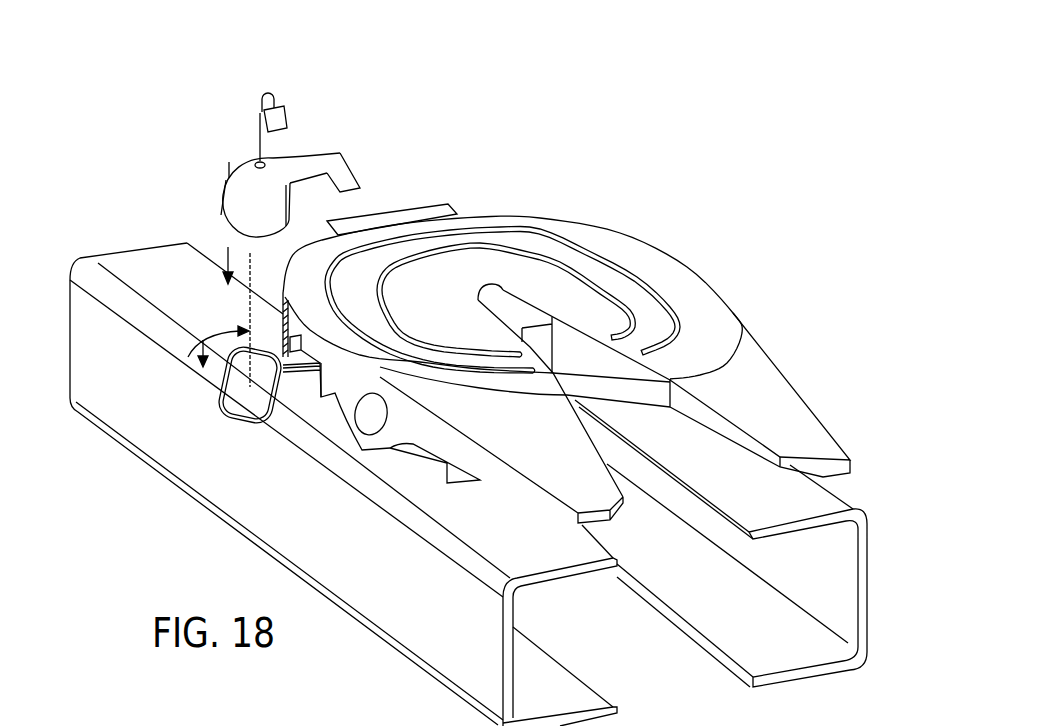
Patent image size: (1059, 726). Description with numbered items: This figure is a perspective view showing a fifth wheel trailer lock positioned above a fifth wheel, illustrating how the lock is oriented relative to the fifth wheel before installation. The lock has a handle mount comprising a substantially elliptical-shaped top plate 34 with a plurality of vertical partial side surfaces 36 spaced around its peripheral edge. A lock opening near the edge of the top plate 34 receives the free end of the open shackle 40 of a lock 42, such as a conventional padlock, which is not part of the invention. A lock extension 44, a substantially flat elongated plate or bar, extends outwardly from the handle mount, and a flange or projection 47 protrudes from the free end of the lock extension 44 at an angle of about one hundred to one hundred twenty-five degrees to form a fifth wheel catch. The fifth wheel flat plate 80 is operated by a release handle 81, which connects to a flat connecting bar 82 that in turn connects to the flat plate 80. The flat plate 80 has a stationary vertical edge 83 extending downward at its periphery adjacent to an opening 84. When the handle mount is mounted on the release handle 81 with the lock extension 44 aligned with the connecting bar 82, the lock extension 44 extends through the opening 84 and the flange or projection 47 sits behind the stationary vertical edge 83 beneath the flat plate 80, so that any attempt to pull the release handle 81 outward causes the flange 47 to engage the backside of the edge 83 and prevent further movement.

The top plate 34 is at (268, 209).
The vertical partial side surfaces 36 is at (228, 163).
The open shackle 40 is at (258, 100).
The lock 42 is at (284, 117).
The lock extension 44 is at (314, 152).
The flange or projection 47 is at (353, 178).
The fifth wheel flat plate 80 is at (657, 260).
The release handle 81 is at (217, 397).
The connecting bar 82 is at (300, 380).
The stationary vertical edge 83 is at (337, 392).
The opening 84 is at (288, 335).